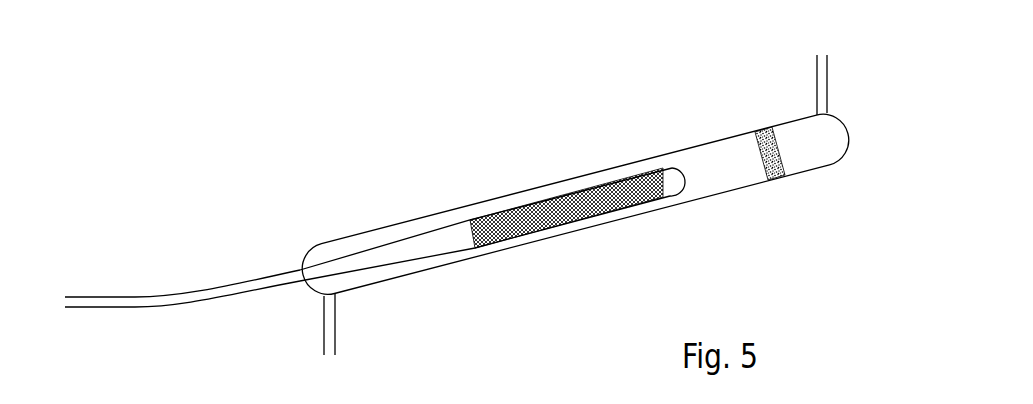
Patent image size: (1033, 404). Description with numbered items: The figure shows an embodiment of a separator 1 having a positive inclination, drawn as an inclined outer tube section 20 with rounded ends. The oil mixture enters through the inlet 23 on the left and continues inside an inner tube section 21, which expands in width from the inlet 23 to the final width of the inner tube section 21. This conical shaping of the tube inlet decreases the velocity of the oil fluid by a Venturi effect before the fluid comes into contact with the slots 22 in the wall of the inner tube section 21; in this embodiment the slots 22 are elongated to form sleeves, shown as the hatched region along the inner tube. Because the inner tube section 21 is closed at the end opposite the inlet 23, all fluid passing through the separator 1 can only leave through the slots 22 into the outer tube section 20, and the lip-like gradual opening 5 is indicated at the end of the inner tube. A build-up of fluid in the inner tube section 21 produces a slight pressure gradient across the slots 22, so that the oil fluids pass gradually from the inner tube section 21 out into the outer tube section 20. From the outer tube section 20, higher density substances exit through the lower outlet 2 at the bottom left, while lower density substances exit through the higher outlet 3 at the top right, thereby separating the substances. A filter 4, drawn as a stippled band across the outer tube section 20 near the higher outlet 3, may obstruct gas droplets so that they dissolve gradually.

The separator 1 is at (376, 101).
The lower outlet 2 is at (337, 332).
The higher outlet 3 is at (828, 82).
The filter 4 is at (758, 160).
The lip-like gradual opening 5 is at (667, 168).
The outer tube section 20 is at (507, 250).
The inner tube section 21 is at (490, 213).
The slots 22 is at (583, 189).
The inlet 23 is at (204, 288).